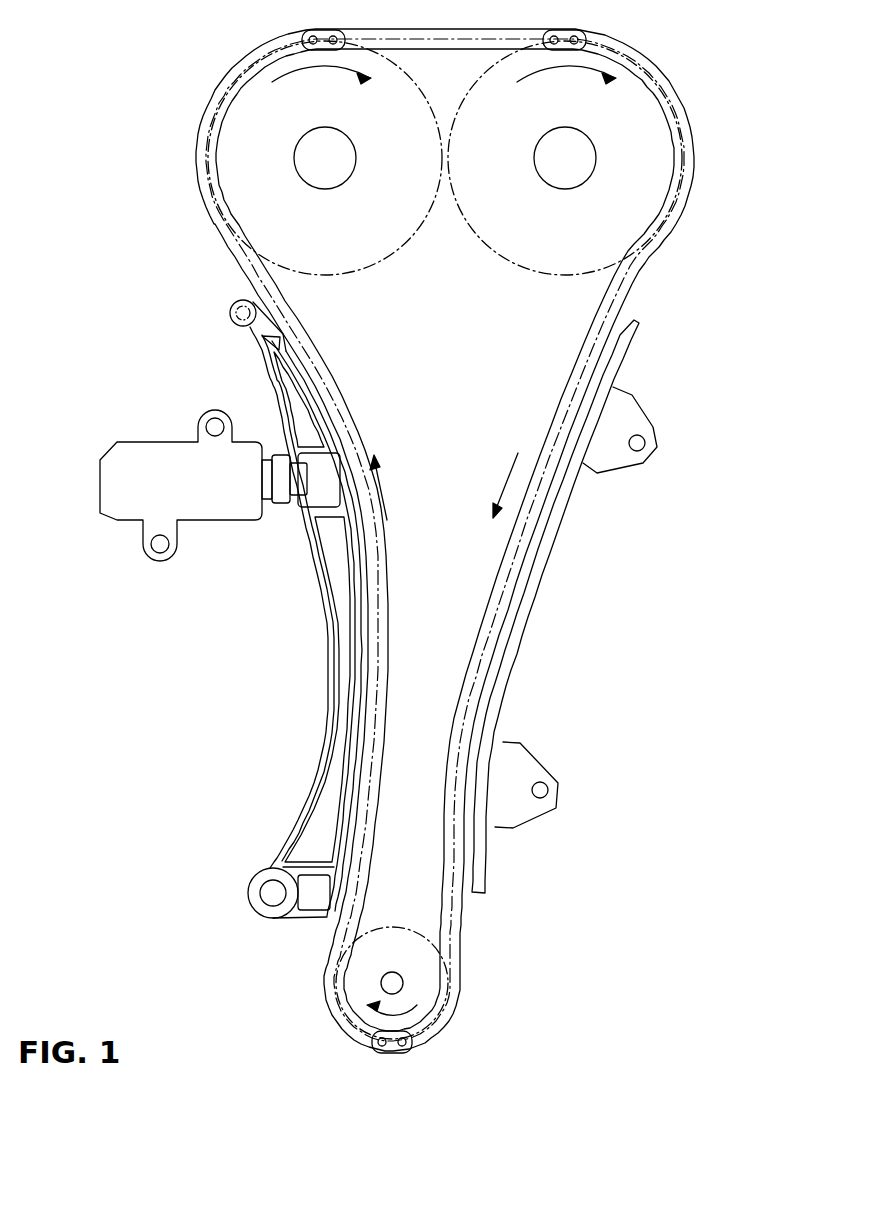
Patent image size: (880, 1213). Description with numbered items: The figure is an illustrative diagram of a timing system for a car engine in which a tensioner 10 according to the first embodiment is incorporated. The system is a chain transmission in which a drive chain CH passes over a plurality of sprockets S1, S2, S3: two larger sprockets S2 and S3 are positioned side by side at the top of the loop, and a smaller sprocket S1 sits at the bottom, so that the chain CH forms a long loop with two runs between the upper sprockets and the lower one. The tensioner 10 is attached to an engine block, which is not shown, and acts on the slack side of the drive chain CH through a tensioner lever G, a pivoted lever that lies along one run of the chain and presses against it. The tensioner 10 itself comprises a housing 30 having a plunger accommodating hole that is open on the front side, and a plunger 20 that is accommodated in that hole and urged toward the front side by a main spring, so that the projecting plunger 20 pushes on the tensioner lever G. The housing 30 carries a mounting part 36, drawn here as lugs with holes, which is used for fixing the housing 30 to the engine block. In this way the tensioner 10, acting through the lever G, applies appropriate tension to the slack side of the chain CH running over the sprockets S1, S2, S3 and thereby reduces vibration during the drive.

The tensioner 10 is at (197, 486).
The plunger 20 is at (262, 483).
The housing 30 is at (174, 455).
The mounting part 36 is at (214, 409).
The tensioner lever G is at (335, 788).
The drive chain CH is at (630, 278).
The sprocket S1 is at (422, 982).
The sprocket S2 is at (243, 152).
The sprocket S3 is at (627, 145).